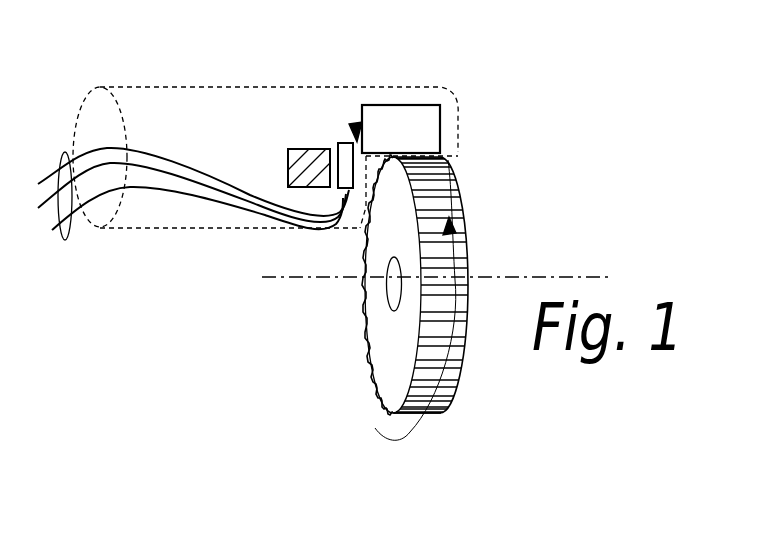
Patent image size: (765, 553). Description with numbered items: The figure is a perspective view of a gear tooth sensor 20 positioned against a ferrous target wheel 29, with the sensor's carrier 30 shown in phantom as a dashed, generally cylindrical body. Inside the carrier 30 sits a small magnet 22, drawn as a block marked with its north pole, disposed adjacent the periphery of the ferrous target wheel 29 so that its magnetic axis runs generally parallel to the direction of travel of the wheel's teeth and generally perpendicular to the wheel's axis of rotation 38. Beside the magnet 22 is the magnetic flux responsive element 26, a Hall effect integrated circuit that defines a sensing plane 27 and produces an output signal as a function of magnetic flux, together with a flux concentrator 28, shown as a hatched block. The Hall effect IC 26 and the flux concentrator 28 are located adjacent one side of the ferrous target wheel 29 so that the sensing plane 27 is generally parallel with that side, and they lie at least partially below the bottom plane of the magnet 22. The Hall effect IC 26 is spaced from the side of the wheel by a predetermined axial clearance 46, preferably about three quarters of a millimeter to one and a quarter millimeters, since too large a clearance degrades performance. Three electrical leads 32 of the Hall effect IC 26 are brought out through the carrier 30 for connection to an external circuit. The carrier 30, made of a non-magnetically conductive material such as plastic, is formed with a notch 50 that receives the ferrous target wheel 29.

The gear tooth sensor 20 is at (218, 288).
The magnet 22 is at (442, 108).
The magnetic flux responsive element 26 is at (343, 142).
The sensing plane 27 is at (352, 207).
The flux concentrator 28 is at (287, 152).
The ferrous target wheel 29 is at (452, 408).
The carrier 30 is at (130, 87).
The electrical leads 32 is at (67, 240).
The axis of rotation 38 is at (323, 278).
The axial clearance 46 is at (354, 123).
The notch 50 is at (368, 208).